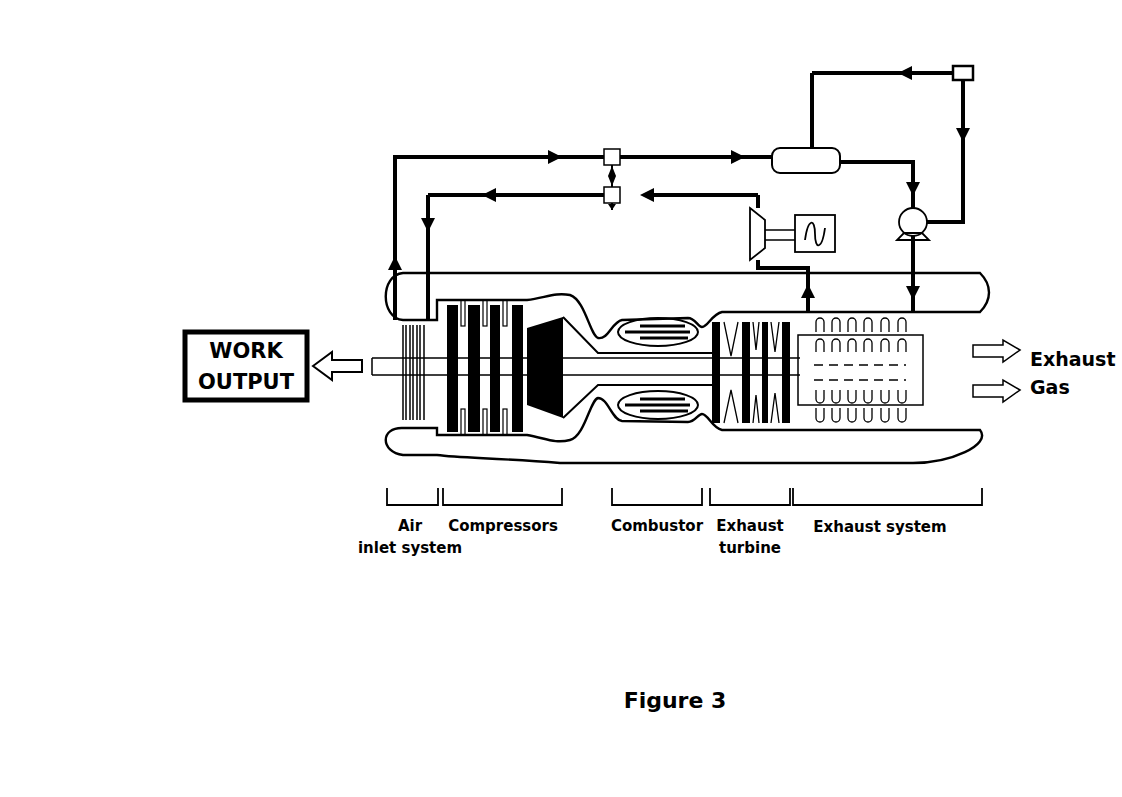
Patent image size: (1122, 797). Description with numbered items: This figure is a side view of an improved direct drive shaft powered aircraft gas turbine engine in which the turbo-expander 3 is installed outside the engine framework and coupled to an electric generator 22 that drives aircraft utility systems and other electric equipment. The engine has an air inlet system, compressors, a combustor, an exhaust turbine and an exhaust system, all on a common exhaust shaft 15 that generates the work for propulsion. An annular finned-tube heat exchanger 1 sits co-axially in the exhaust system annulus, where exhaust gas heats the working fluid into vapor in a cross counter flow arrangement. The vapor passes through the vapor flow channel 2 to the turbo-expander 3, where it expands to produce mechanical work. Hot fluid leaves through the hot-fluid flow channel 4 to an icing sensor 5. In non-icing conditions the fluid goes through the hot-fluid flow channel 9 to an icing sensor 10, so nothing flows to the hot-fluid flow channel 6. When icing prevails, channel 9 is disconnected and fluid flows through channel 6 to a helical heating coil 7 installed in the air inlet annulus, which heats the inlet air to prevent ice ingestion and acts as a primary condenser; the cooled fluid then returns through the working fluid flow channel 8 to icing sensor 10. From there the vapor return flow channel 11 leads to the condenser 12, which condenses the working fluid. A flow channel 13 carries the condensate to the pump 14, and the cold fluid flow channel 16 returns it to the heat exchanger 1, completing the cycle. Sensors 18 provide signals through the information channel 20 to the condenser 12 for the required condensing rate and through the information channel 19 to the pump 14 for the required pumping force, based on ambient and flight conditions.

The annular finned-tube heat exchanger 1 is at (927, 380).
The vapor flow channel 2 is at (795, 278).
The turbo-expander 3 is at (745, 242).
The hot-fluid flow channel 4 is at (686, 200).
The icing sensor 5 is at (607, 206).
The hot-fluid flow channel 6 is at (432, 255).
The helical heating coil 7 is at (392, 397).
The working fluid flow channel 8 is at (548, 155).
The hot-fluid flow channel 9 is at (621, 180).
The icing sensor 10 is at (609, 147).
The vapor return flow channel 11 is at (697, 145).
The condenser 12 is at (800, 147).
The flow channel 13 is at (862, 160).
The pump 14 is at (900, 224).
The exhaust shaft 15 is at (380, 357).
The cold fluid flow channel 16 is at (918, 265).
The sensors 18 is at (972, 66).
The information channel 19 is at (964, 190).
The information channel 20 is at (876, 70).
The electric generator 22 is at (836, 232).